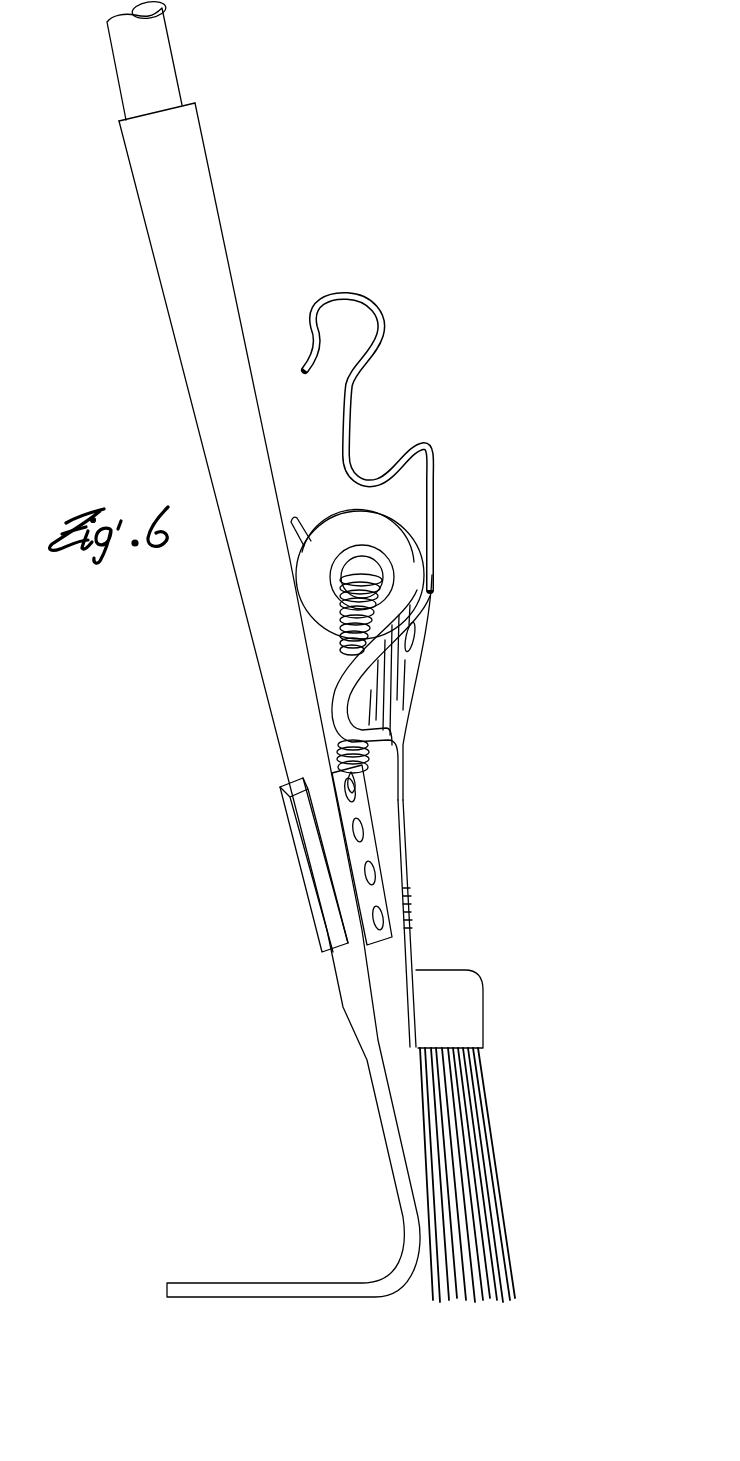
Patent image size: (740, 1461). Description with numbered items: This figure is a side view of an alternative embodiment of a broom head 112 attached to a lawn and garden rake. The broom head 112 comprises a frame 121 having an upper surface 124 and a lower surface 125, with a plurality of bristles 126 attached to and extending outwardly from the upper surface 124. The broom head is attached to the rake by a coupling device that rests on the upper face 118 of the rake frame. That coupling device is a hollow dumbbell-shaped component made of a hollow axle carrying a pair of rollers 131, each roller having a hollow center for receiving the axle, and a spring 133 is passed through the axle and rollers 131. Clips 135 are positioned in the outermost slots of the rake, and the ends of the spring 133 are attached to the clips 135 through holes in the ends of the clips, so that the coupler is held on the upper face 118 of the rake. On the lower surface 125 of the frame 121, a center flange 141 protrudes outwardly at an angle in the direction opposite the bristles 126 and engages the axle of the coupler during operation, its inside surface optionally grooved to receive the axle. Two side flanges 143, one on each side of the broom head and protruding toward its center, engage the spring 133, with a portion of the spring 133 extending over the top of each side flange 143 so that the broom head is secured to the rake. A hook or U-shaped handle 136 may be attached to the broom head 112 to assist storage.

The broom head 112 is at (157, 228).
The upper face of the rake frame 118 is at (228, 264).
The hook or U-shaped handle 136 is at (363, 285).
The rollers 131 is at (403, 518).
The center flange 141 is at (296, 520).
The spring 133 is at (385, 583).
The side flanges 143 is at (348, 710).
The frame 121 is at (422, 763).
The upper surface 124 is at (403, 819).
The lower surface 125 is at (392, 860).
The clips 135 is at (297, 843).
The bristles 126 is at (487, 1137).